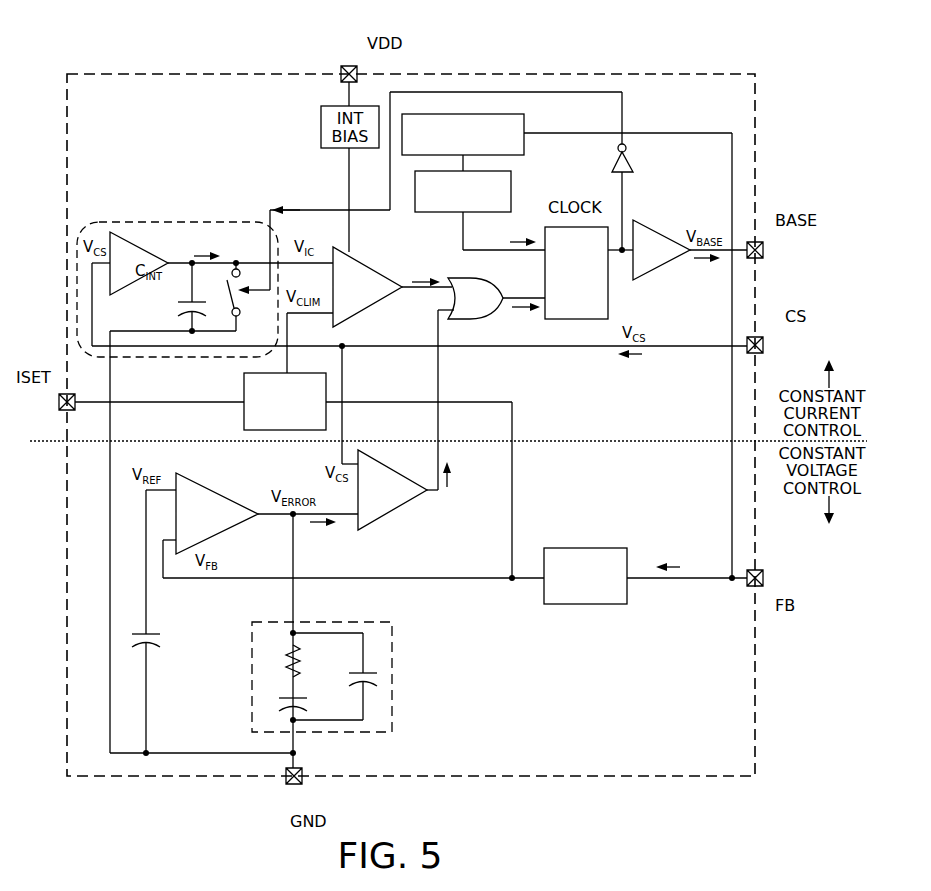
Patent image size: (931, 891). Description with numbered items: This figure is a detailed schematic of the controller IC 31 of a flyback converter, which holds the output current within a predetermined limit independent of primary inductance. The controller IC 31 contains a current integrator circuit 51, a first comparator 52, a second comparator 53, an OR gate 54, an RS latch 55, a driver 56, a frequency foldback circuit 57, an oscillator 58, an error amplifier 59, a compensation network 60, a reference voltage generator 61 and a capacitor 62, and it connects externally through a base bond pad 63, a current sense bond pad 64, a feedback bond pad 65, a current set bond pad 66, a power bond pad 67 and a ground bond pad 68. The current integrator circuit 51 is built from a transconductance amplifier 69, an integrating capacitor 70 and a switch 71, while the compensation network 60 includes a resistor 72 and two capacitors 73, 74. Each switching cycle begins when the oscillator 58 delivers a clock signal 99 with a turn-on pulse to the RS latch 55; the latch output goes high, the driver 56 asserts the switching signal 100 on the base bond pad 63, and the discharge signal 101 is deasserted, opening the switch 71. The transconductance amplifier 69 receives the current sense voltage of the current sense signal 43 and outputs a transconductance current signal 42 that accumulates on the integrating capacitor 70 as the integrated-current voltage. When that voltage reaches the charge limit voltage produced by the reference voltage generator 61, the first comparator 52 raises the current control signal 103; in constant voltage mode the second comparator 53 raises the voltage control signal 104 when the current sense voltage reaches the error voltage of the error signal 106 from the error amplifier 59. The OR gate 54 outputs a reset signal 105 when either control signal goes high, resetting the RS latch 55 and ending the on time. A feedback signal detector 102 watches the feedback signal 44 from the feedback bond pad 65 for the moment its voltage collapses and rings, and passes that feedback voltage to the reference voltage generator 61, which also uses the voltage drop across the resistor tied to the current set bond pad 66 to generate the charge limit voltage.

The controller IC 31 is at (621, 74).
The transconductance current signal 42 is at (203, 254).
The current sense signal 43 is at (634, 358).
The feedback signal 44 is at (669, 567).
The current integrator circuit 51 is at (133, 222).
The first comparator 52 is at (381, 277).
The second comparator 53 is at (414, 504).
The OR gate 54 is at (475, 298).
The RS latch 55 is at (576, 273).
The driver 56 is at (654, 232).
The frequency foldback circuit 57 is at (524, 118).
The oscillator 58 is at (511, 180).
The error amplifier 59 is at (220, 537).
The compensation network 60 is at (392, 630).
The reference voltage generator 61 is at (285, 402).
The capacitor 62 is at (162, 643).
The base bond pad 63 is at (764, 247).
The current sense bond pad 64 is at (764, 342).
The feedback bond pad 65 is at (764, 582).
The current set bond pad 66 is at (57, 400).
The power bond pad 67 is at (358, 70).
The ground bond pad 68 is at (300, 784).
The transconductance amplifier 69 is at (134, 246).
The integrating capacitor 70 is at (178, 313).
The switch 71 is at (239, 300).
The resistor 72 is at (300, 652).
The capacitor 73 is at (348, 680).
The capacitor 74 is at (308, 704).
The clock signal 99 is at (520, 239).
The switching signal 100 is at (703, 262).
The discharge signal 101 is at (292, 210).
The feedback signal detector 102 is at (585, 576).
The current control signal 103 is at (425, 282).
The voltage control signal 104 is at (450, 478).
The reset signal 105 is at (522, 310).
The error signal 106 is at (318, 526).